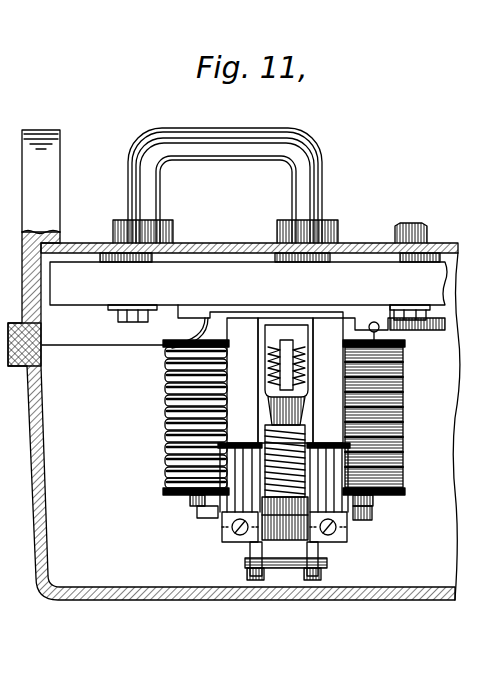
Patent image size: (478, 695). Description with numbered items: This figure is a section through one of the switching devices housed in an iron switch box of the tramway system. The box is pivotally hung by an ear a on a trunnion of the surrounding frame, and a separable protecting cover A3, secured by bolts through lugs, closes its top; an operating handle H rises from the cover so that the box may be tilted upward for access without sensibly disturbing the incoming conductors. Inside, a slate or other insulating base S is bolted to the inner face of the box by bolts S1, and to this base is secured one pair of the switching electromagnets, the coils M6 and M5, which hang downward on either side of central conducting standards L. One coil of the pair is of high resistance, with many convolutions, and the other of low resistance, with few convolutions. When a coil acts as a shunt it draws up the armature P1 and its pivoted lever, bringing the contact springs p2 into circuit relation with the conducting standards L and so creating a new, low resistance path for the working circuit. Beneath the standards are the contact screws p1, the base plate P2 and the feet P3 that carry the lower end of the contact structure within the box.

The ear a is at (50, 177).
The operating handle H is at (255, 152).
The protecting cover A3 is at (375, 229).
The insulating base S is at (306, 441).
The bolt S1 is at (420, 355).
The conducting standard L is at (240, 443).
The switching electromagnet M6 is at (165, 415).
The switching electromagnet M5 is at (405, 418).
The contact spring p2 is at (388, 518).
The contact screws p1 is at (342, 543).
The armature P1 is at (362, 521).
The base plate P2 is at (290, 570).
The feet P3 is at (256, 580).